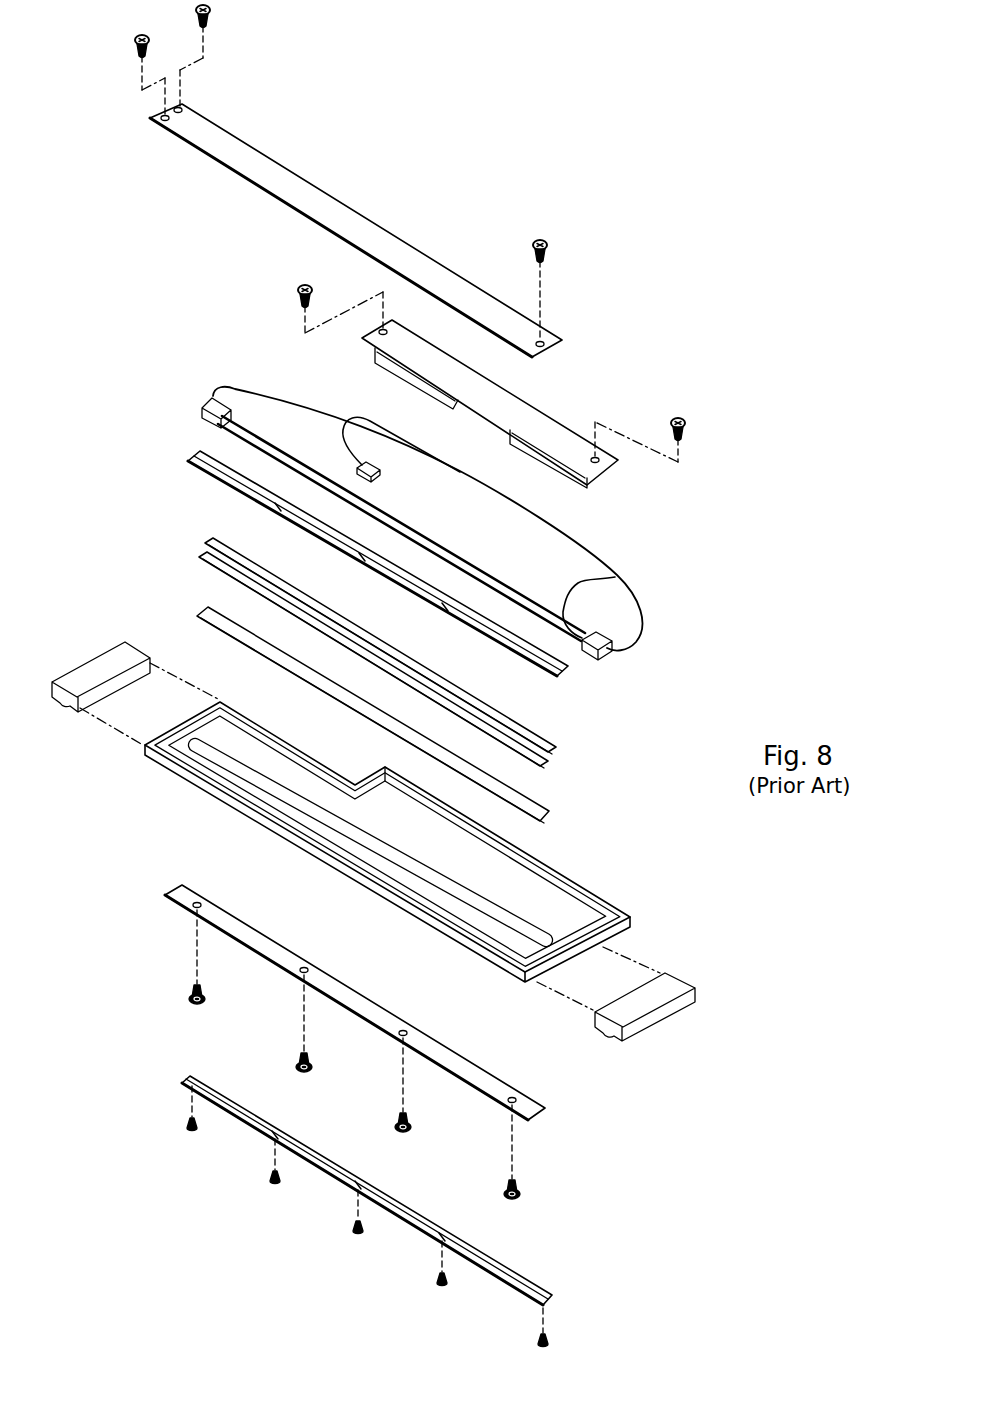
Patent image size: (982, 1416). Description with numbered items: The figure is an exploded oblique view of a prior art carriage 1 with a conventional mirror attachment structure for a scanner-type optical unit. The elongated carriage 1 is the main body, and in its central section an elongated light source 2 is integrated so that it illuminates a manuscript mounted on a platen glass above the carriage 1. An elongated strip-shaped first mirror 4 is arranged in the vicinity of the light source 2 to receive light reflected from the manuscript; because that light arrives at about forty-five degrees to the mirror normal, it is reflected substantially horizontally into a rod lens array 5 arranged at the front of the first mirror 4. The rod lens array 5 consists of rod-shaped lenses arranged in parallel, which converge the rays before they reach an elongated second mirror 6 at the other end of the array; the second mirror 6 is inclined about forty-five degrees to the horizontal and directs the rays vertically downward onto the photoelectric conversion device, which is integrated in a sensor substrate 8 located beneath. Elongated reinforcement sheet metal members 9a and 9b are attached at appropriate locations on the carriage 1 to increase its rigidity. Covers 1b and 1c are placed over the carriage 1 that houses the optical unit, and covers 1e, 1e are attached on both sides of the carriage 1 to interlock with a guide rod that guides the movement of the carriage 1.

The carriage 1 is at (570, 910).
The cover 1b is at (384, 232).
The cover 1c is at (538, 418).
The cover 1e is at (93, 670).
The light source 2 is at (613, 581).
The first mirror 4 is at (548, 747).
The rod lens array 5 is at (542, 763).
The second mirror 6 is at (213, 612).
The sensor substrate 8 is at (363, 1002).
The reinforcement sheet metal member 9a is at (522, 1284).
The reinforcement sheet metal member 9b is at (222, 466).